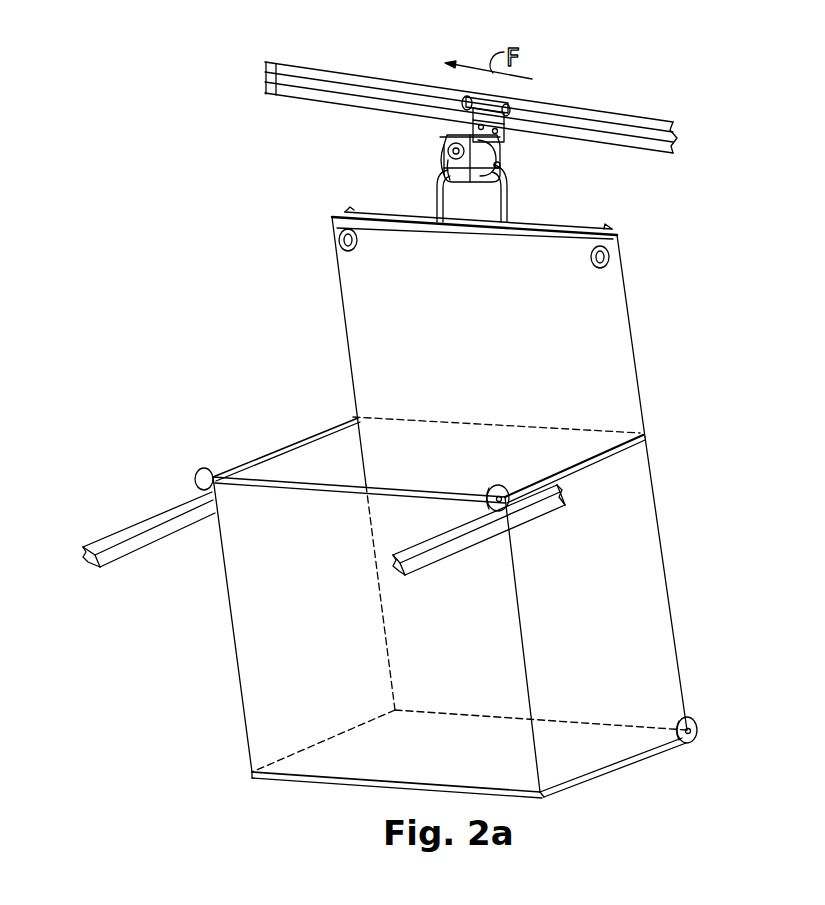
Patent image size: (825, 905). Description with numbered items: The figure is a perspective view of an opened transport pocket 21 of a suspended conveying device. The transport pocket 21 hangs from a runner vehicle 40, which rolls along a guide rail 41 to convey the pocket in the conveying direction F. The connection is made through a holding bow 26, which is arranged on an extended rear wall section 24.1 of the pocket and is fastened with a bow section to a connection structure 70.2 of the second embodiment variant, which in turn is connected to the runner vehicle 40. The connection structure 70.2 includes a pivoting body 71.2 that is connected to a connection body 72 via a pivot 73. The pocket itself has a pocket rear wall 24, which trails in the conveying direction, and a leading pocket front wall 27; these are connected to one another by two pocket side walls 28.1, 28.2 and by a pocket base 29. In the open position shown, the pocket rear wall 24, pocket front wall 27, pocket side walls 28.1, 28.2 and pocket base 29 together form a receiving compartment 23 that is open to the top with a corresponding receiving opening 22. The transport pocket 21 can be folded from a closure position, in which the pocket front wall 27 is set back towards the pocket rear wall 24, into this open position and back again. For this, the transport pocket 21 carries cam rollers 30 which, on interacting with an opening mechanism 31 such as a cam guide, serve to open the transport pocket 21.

The transport pocket 21 is at (677, 641).
The receiving opening 22 is at (385, 478).
The receiving compartment 23 is at (420, 453).
The pocket rear wall 24 is at (507, 458).
The extended rear wall section 24.1 is at (592, 305).
The holding bow 26 is at (512, 203).
The pocket front wall 27 is at (415, 655).
The pocket side wall 28.1 is at (320, 472).
The pocket side wall 28.2 is at (629, 508).
The pocket base 29 is at (625, 760).
The cam roller 30 is at (199, 494).
The opening mechanism 31 is at (393, 563).
The runner vehicle 40 is at (510, 112).
The guide rail 41 is at (360, 104).
The connection structure 70.2 is at (436, 157).
The pivoting body 71.2 is at (499, 167).
The connection body 72 is at (498, 153).
The pivot 73 is at (441, 181).